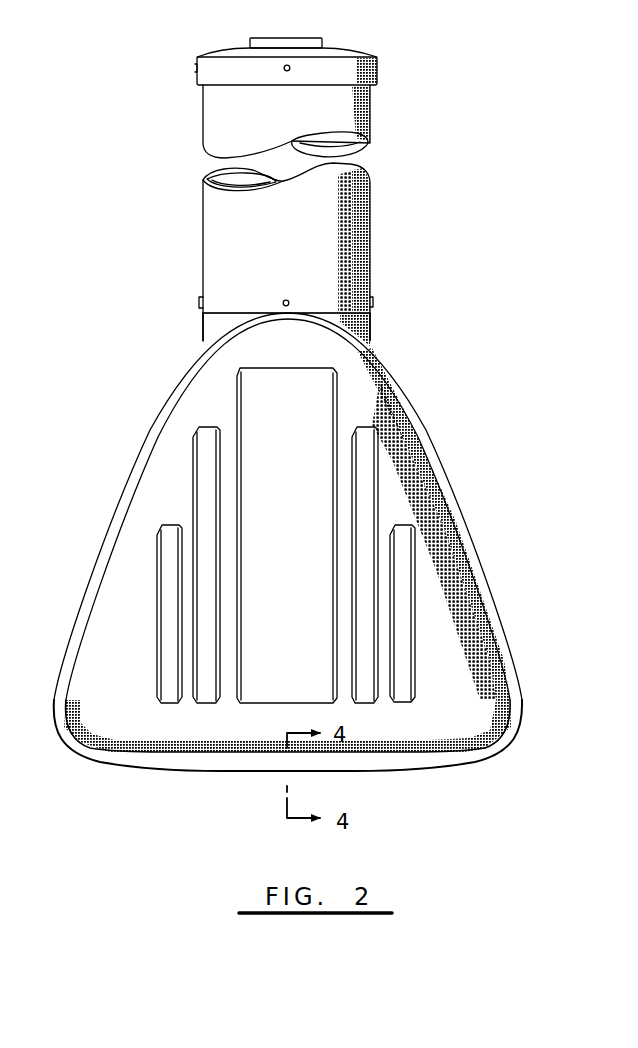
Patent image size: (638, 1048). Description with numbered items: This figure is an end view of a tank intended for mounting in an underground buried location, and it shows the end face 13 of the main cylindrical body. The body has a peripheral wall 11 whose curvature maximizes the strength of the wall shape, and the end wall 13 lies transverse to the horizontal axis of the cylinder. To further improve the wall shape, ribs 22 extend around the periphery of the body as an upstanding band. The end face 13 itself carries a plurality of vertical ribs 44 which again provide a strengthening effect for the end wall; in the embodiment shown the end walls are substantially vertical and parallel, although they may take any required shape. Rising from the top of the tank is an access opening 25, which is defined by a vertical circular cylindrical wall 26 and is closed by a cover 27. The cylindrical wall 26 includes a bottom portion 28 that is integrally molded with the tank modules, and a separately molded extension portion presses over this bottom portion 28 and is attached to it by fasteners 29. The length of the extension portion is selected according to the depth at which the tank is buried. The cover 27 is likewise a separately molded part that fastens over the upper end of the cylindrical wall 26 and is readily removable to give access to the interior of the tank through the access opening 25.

The peripheral wall 11 is at (428, 447).
The end wall 13 is at (404, 501).
The ribs 22 is at (513, 663).
The access opening 25 is at (183, 187).
The vertical circular cylindrical wall 26 is at (348, 243).
The cover 27 is at (201, 47).
The bottom portion 28 is at (213, 327).
The fasteners 29 is at (199, 304).
The vertical ribs 44 is at (400, 603).